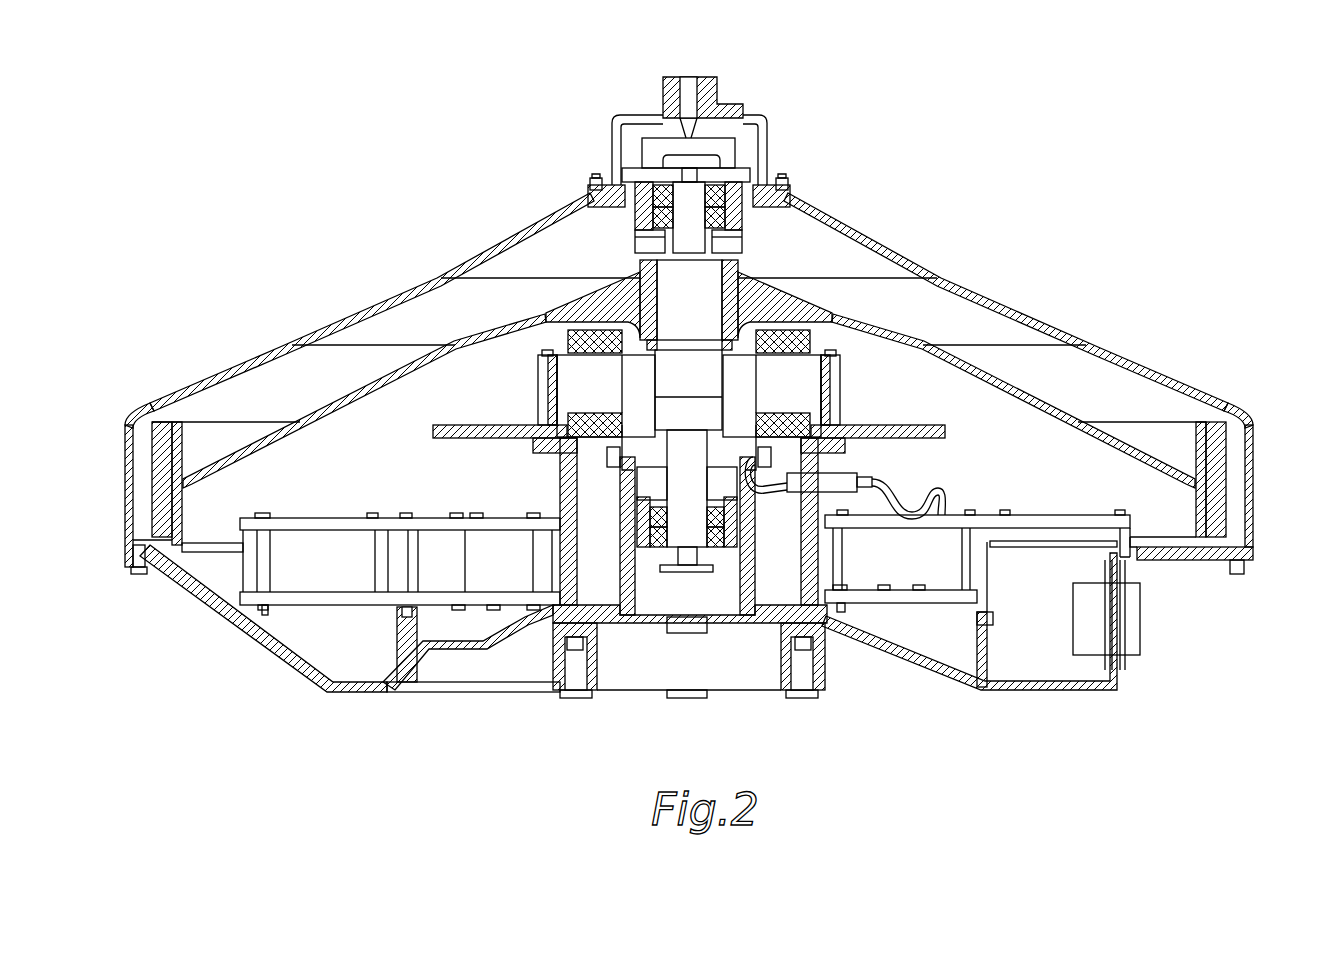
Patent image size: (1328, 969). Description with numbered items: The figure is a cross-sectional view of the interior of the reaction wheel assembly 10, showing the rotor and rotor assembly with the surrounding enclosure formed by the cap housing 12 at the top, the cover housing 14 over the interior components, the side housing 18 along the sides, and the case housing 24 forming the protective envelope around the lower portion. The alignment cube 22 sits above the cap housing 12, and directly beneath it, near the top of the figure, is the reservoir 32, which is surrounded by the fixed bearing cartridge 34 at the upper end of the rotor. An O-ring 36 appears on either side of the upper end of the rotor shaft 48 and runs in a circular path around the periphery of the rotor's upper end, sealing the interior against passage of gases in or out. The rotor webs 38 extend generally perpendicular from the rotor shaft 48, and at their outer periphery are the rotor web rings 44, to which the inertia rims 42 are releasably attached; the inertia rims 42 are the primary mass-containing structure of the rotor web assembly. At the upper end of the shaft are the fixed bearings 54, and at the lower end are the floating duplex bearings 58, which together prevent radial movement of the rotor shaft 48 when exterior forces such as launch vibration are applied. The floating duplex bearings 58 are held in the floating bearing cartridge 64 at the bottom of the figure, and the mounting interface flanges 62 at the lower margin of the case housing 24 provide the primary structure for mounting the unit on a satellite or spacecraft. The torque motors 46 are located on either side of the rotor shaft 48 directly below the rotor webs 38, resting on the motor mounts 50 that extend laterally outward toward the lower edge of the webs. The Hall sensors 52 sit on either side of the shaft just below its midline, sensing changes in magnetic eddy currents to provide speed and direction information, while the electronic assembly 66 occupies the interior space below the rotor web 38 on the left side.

The reaction wheel assembly 10 is at (686, 390).
The cap housing 12 is at (627, 115).
The cover housing 14 is at (293, 340).
The side housing 18 is at (124, 492).
The alignment cube 22 is at (708, 76).
The case housing 24 is at (245, 632).
The reservoir 32 is at (735, 140).
The fixed bearing cartridge 34 is at (737, 152).
The O-ring 36 is at (595, 185).
The rotor webs 38 is at (563, 280).
The inertia rims 42 is at (152, 440).
The rotor web rings 44 is at (183, 450).
The torque motors 46 is at (565, 347).
The rotor shaft 48 is at (673, 308).
The motor mounts 50 is at (473, 422).
The Hall sensors 52 is at (562, 470).
The fixed bearings 54 is at (703, 193).
The floating duplex bearings 58 is at (690, 533).
The mounting interface flanges 62 is at (570, 700).
The floating bearing cartridge 64 is at (677, 583).
The electronic assembly 66 is at (327, 532).